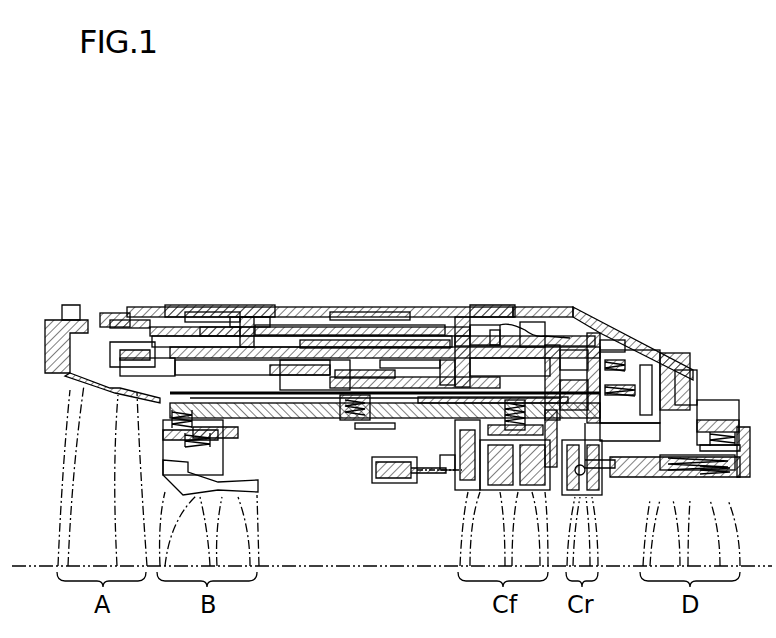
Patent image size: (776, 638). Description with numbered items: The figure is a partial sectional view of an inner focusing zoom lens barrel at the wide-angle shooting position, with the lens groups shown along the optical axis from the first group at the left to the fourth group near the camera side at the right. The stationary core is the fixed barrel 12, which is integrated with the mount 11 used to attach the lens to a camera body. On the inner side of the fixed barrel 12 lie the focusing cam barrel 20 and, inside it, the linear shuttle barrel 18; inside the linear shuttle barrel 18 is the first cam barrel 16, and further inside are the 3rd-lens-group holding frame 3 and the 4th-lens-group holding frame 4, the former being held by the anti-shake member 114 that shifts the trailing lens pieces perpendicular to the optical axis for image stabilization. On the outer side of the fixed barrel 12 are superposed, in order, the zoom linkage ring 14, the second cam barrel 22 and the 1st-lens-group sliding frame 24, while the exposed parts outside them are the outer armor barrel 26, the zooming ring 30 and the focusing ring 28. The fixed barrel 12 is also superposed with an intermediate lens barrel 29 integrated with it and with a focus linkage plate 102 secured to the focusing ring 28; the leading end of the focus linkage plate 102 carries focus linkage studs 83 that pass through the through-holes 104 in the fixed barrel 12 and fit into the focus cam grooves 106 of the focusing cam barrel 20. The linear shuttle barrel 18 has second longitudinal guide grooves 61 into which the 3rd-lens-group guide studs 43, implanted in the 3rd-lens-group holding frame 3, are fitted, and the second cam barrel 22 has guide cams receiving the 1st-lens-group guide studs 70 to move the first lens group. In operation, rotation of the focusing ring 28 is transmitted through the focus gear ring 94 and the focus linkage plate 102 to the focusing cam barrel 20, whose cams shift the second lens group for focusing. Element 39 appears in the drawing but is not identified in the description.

The 3rd-lens-group holding frame 3 is at (493, 497).
The 4th-lens-group holding frame 4 is at (677, 503).
The mount 11 is at (700, 395).
The fixed barrel 12 is at (535, 385).
The zoom linkage ring 14 is at (385, 370).
The first cam barrel 16 is at (630, 395).
The linear shuttle barrel 18 is at (145, 363).
The focusing cam barrel 20 is at (290, 390).
The second cam barrel 22 is at (130, 312).
The 1st-lens-group sliding frame 24 is at (95, 306).
The outer armor barrel 26 is at (230, 335).
The focusing ring 28 is at (230, 318).
The intermediate lens barrel 29 is at (348, 375).
The zooming ring 30 is at (483, 305).
The spacer 39 is at (246, 320).
The 3rd-lens-group guide studs 43 is at (560, 375).
The second longitudinal guide grooves 61 is at (515, 398).
The 1st-lens-group guide studs 70 is at (458, 322).
The focus linkage studs 83 is at (357, 375).
The focus gear ring 94 is at (570, 350).
The focus linkage plate 102 is at (400, 380).
The through-holes 104 is at (350, 402).
The focus cam grooves 106 is at (388, 428).
The anti-shake member 114 is at (607, 340).